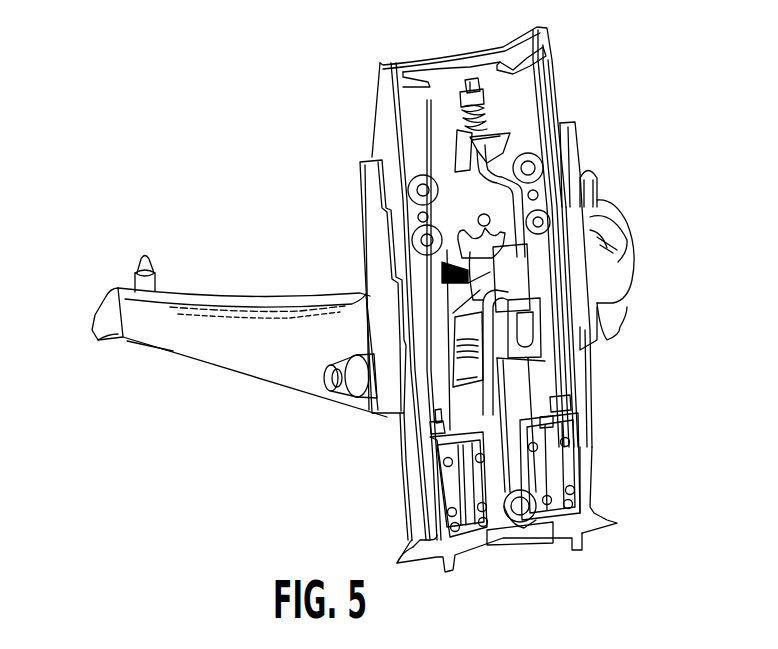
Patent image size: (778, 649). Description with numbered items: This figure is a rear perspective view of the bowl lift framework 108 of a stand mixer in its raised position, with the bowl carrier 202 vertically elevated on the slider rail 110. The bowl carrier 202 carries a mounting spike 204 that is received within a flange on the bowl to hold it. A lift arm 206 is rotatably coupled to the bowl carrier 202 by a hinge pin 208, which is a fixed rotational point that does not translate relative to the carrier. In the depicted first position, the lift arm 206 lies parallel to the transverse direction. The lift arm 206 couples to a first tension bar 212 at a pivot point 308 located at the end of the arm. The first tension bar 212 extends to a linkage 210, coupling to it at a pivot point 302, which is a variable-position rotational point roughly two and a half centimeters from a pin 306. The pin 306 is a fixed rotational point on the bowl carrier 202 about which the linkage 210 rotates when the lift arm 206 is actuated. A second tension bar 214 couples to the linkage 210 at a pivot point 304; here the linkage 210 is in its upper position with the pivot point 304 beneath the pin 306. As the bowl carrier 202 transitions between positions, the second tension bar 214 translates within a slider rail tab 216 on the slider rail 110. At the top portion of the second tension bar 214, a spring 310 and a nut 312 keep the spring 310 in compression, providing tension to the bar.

The bowl lift framework 108 is at (256, 76).
The slider rail 110 is at (410, 110).
The bowl carrier 202 is at (255, 300).
The mounting spike 204 is at (138, 268).
The lift arm 206 is at (107, 320).
The hinge pin 208 is at (327, 382).
The linkage 210 is at (537, 280).
The first tension bar 212 is at (490, 432).
The second tension bar 214 is at (550, 247).
The slider rail tab 216 is at (503, 127).
The pivot point 302 is at (530, 300).
The pivot point 304 is at (545, 362).
The pin 306 is at (445, 268).
The pivot point 308 is at (527, 497).
The spring 310 is at (483, 110).
The nut 312 is at (467, 83).